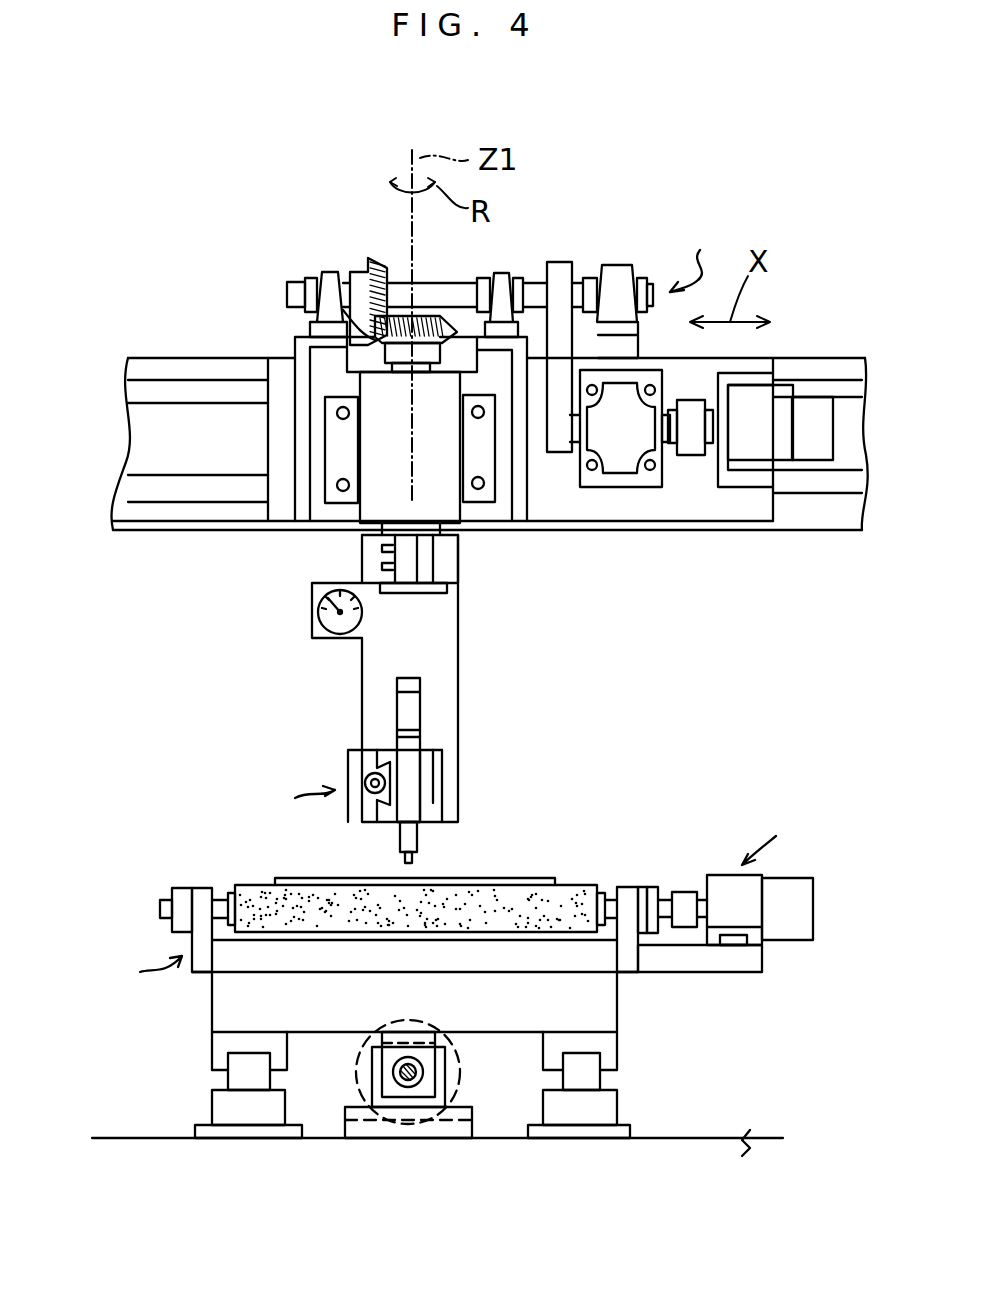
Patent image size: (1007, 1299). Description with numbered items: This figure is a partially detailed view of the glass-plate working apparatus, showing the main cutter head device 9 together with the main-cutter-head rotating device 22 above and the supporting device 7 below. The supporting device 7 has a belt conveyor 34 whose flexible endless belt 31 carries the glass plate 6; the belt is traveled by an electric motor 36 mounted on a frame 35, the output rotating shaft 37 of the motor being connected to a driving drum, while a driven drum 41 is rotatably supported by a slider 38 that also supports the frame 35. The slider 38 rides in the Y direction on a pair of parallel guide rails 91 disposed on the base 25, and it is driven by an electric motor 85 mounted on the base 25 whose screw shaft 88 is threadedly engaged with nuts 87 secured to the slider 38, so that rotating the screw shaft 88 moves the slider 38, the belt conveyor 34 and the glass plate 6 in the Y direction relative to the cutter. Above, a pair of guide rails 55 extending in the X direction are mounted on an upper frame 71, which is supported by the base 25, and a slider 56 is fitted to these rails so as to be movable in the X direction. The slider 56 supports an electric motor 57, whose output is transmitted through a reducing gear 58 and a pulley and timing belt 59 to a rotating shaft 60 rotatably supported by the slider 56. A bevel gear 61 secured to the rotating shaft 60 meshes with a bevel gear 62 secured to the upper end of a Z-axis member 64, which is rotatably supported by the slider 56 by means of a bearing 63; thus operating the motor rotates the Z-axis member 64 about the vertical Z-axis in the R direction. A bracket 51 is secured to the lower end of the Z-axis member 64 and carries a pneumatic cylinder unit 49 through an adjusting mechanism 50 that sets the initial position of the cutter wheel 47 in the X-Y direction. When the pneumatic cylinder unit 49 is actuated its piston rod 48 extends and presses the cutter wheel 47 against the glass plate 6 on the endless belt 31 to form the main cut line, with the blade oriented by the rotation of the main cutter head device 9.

The glass plate 6 is at (546, 880).
The supporting device 7 is at (146, 974).
The main cutter head device 9 is at (300, 799).
The main-cutter-head rotating device 22 is at (699, 251).
The base 25 is at (437, 1124).
The endless belt 31 is at (264, 890).
The belt conveyor 34 is at (757, 874).
The frame 35 is at (742, 964).
The electric motor 36 is at (795, 880).
The output rotating shaft 37 is at (700, 905).
The slider 38 is at (606, 994).
The driven drum 41 is at (222, 895).
The cutter wheel 47 is at (414, 862).
The piston rod 48 is at (400, 840).
The pneumatic cylinder unit 49 is at (415, 746).
The adjusting mechanism 50 is at (358, 768).
The bracket 51 is at (448, 655).
The guide rails 55 is at (826, 362).
The slider 56 is at (683, 502).
The electric motor 57 is at (750, 440).
The reducing gear 58 is at (628, 465).
The pulley and timing belt 59 is at (557, 274).
The rotating shaft 60 is at (532, 295).
The bevel gear 61 is at (378, 275).
The bevel gear 62 is at (380, 343).
The bearing 63 is at (358, 457).
The Z-axis member 64 is at (440, 586).
The upper frame 71 is at (152, 358).
The electric motor 85 is at (368, 1070).
The nuts 87 is at (425, 1090).
The screw shaft 88 is at (408, 1082).
The guide rails 91 is at (240, 1078).